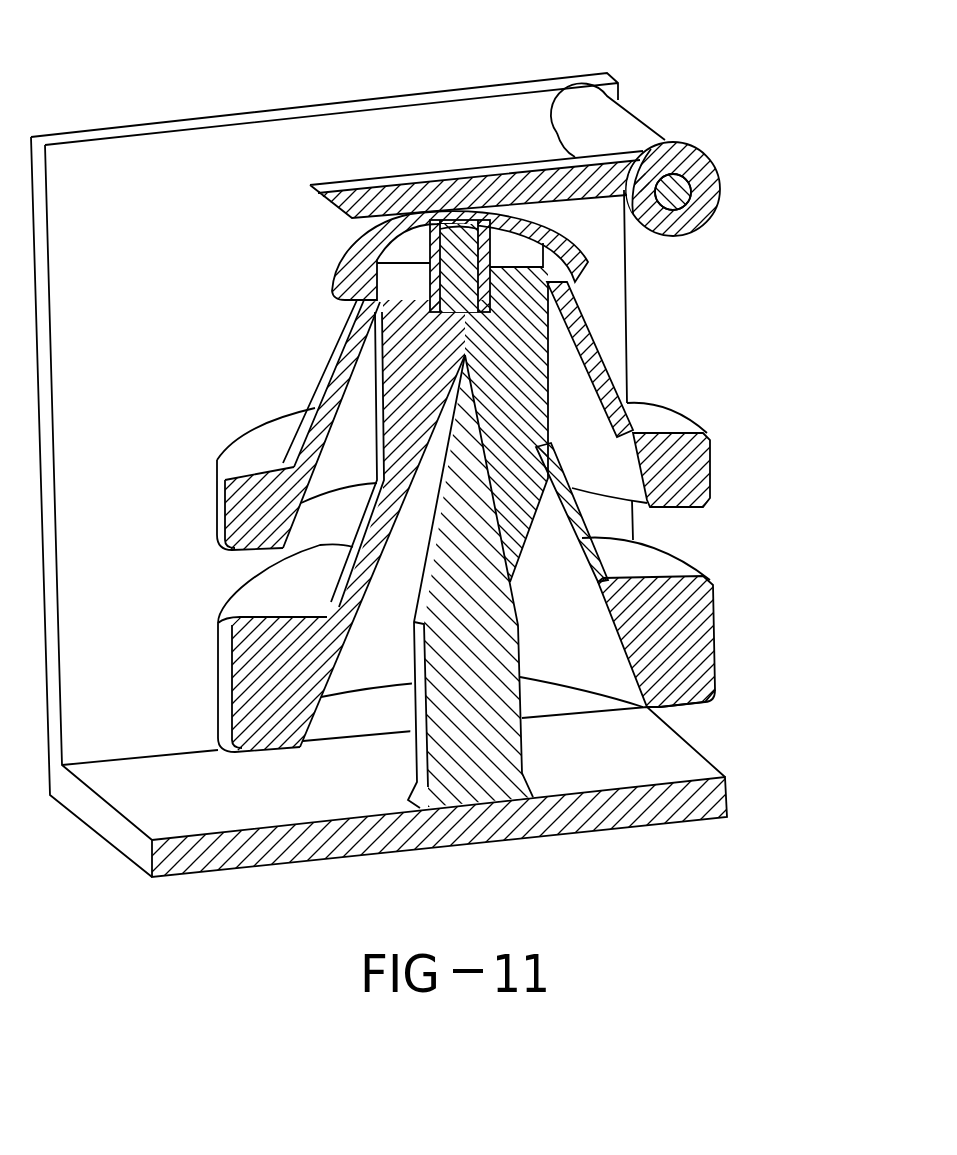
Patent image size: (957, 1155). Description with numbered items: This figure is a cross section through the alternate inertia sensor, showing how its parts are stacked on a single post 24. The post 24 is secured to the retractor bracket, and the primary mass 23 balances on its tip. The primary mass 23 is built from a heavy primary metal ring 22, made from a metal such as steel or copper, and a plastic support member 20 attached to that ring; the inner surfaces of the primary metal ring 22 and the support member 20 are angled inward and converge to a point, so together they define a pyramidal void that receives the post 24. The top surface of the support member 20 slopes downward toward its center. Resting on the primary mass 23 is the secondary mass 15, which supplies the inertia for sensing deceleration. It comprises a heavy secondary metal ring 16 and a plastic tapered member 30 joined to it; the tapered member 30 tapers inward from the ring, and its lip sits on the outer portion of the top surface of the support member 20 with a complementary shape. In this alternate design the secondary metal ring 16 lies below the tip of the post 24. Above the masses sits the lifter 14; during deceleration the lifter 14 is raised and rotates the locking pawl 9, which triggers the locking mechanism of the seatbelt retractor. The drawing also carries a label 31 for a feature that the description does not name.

The locking pawl 9 is at (438, 190).
The lifter 14 is at (562, 251).
The secondary mass 15 is at (300, 374).
The secondary metal ring 16 is at (677, 476).
The support member 20 is at (531, 447).
The primary metal ring 22 is at (680, 650).
The primary mass 23 is at (740, 696).
The post 24 is at (483, 748).
The tapered member 30 is at (603, 367).
The slot 31 is at (522, 297).